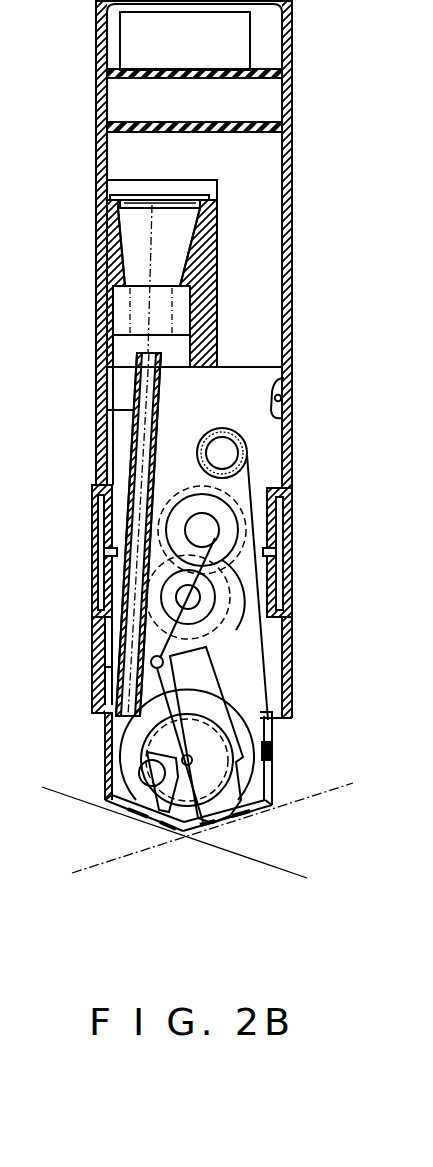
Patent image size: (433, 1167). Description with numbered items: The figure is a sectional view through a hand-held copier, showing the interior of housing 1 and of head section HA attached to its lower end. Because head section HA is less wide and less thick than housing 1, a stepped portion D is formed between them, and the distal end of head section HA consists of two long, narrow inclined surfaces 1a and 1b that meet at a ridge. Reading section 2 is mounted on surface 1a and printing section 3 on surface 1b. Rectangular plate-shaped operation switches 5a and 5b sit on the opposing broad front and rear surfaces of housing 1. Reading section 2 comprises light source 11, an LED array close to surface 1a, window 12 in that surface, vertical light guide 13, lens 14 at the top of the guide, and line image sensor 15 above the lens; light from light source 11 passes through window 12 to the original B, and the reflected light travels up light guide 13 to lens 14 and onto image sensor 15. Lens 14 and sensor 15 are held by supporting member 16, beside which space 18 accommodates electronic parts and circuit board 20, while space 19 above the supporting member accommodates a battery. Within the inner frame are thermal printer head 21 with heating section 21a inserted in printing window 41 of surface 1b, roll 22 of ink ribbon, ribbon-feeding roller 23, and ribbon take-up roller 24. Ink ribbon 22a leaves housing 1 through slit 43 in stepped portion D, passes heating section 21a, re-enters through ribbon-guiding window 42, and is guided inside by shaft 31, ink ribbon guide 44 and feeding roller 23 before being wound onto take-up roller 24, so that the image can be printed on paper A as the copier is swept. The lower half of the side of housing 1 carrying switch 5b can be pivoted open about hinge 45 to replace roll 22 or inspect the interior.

The housing 1 is at (292, 238).
The inclined surface 1a is at (147, 805).
The inclined surface 1b is at (270, 808).
The reading section 2 is at (153, 835).
The printing section 3 is at (238, 835).
The operation switch 5a is at (92, 530).
The operation switch 5b is at (291, 515).
The light source 11 is at (141, 768).
The window 12 is at (130, 800).
The vertical light guide 13 is at (122, 633).
The lens 14 is at (115, 315).
The line image sensor 15 is at (137, 213).
The supporting member 16 is at (213, 277).
The space 18 is at (262, 168).
The space 19 is at (262, 105).
The circuit board 20 is at (245, 43).
The thermal printer head 21 is at (268, 706).
The heating section 21a is at (247, 810).
The roll of ink ribbon 22 is at (228, 440).
The ink ribbon 22a is at (249, 452).
The ribbon-feeding roller 23 is at (224, 630).
The ribbon take-up roller 24 is at (180, 507).
The shaft 31 is at (245, 762).
The printing window 41 is at (270, 812).
The ribbon-guiding window 42 is at (207, 830).
The slit 43 is at (262, 747).
The ink ribbon guide 44 is at (150, 664).
The hinge 45 is at (283, 382).
The head section HA is at (108, 740).
The stepped portion D is at (285, 718).
The paper A is at (80, 870).
The original B is at (285, 875).